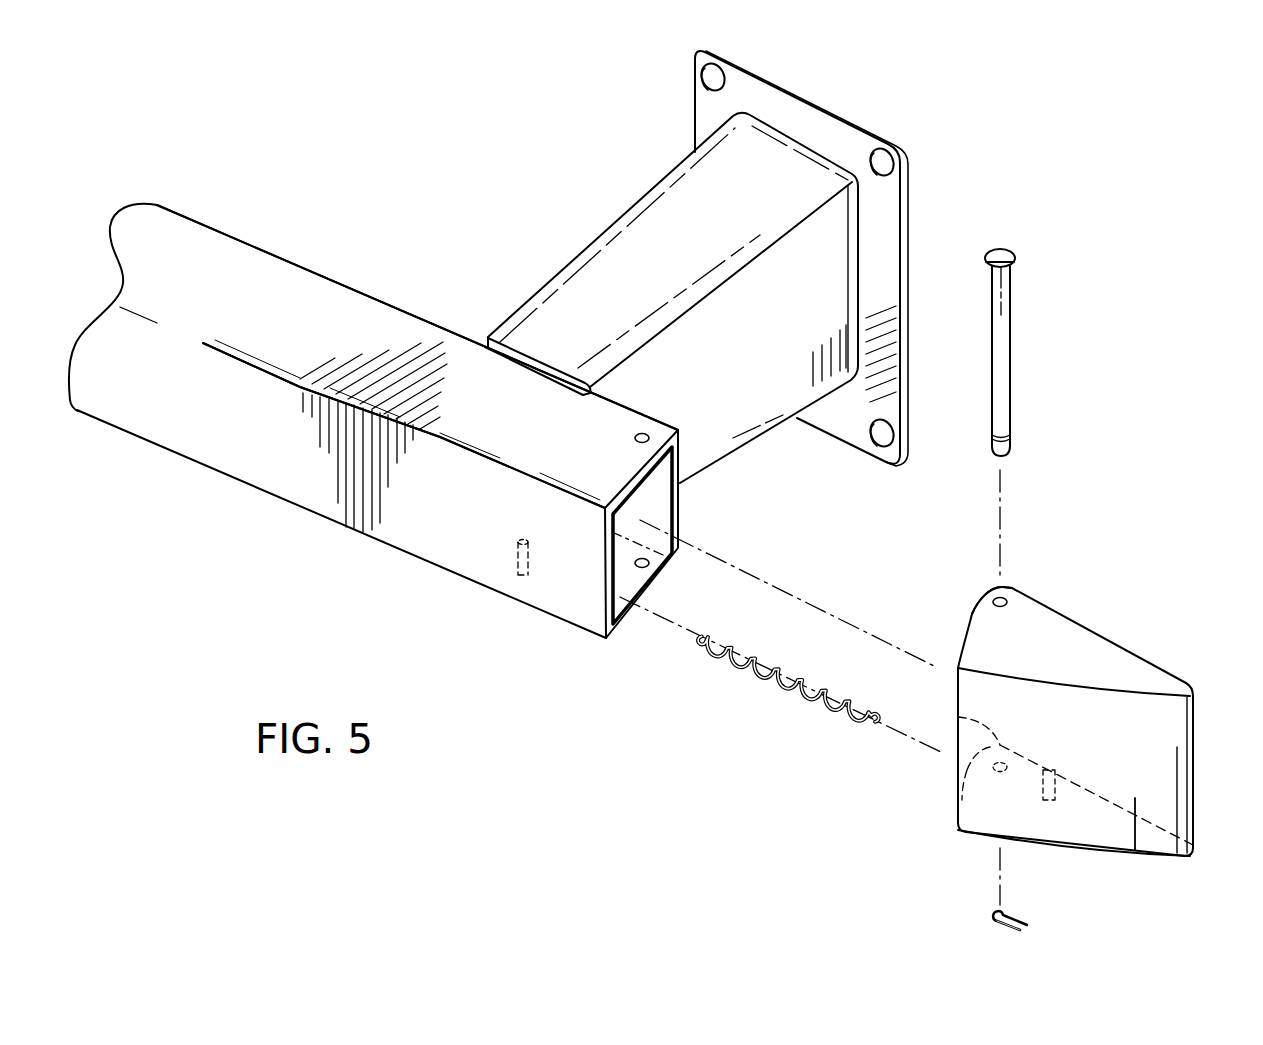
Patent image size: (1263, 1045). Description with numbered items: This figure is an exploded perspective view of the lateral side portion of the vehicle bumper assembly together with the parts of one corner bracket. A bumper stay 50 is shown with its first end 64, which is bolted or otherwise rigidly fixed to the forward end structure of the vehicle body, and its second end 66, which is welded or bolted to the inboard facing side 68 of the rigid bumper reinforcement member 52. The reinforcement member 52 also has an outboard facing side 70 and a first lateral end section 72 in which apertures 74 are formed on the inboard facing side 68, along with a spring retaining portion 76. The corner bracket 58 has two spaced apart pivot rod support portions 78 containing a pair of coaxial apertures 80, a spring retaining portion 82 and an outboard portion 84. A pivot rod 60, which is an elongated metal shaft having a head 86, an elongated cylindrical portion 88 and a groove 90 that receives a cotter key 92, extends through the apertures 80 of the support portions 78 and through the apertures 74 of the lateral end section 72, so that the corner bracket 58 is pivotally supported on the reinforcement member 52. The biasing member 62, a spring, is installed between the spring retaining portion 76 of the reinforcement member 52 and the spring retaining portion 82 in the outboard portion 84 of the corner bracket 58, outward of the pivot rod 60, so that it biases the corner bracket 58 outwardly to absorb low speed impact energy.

The bumper stay 50 is at (667, 220).
The rigid bumper reinforcement member 52 is at (240, 287).
The corner bracket 58 is at (1155, 782).
The pivot rod 60 is at (1063, 341).
The biasing member 62 is at (780, 688).
The first end 64 is at (808, 127).
The second end 66 is at (530, 340).
The inboard facing side 68 is at (333, 280).
The outboard facing side 70 is at (260, 372).
The first lateral end section 72 is at (597, 483).
The aperture 74 is at (649, 433).
The spring retaining portion 76 is at (520, 571).
The pivot rod support portion 78 is at (1010, 596).
The aperture 80 is at (1000, 608).
The spring retaining portion 82 is at (1041, 802).
The outboard portion 84 is at (1107, 828).
The head 86 is at (1003, 254).
The elongated cylindrical portion 88 is at (1000, 358).
The groove 90 is at (1036, 428).
The cotter key 92 is at (1000, 928).